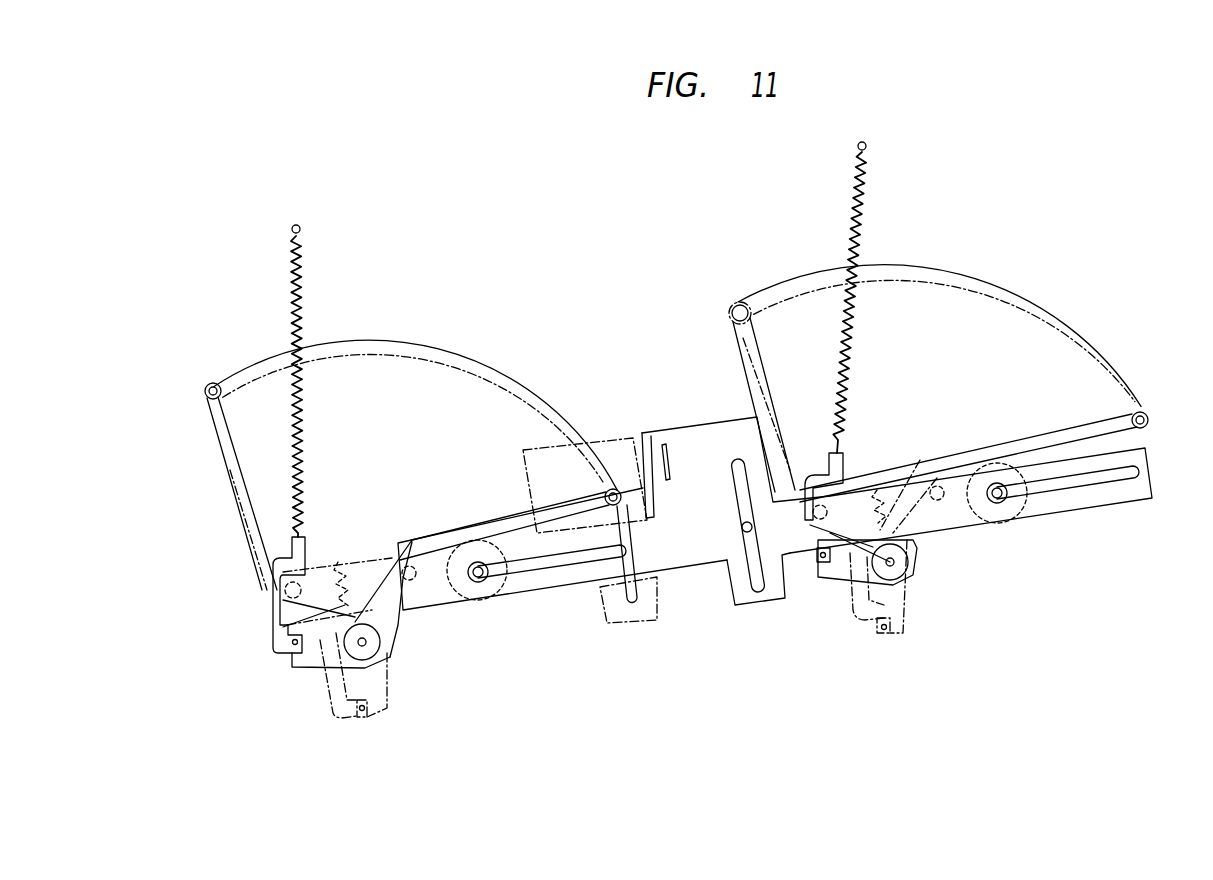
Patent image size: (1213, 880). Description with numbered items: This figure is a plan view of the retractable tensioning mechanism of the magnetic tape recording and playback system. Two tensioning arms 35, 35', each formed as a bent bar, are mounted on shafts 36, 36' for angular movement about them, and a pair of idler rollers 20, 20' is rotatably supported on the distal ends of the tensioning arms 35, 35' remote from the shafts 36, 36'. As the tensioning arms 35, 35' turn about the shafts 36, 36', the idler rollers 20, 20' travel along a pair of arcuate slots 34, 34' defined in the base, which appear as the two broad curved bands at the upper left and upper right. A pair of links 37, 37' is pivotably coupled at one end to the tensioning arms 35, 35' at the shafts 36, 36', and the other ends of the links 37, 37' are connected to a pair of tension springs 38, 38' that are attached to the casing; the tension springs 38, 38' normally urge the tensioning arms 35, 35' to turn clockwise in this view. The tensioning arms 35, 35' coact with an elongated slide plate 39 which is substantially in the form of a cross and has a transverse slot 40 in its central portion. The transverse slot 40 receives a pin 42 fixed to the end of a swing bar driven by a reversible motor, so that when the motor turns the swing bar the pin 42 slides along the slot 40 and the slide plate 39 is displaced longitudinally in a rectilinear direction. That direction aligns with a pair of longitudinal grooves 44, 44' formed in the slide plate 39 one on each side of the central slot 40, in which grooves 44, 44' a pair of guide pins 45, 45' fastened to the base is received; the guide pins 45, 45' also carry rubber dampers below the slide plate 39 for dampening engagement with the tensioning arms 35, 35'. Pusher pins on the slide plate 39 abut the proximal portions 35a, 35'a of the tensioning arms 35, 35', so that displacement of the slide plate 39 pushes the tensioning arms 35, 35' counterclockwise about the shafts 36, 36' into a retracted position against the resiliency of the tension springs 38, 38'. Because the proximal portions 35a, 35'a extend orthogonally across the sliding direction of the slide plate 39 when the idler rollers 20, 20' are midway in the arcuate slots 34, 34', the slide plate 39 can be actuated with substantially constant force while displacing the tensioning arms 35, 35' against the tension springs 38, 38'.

The idler roller 20 is at (939, 365).
The idler roller 20' is at (414, 420).
The arcuate slot 34 is at (944, 336).
The arcuate slot 34' is at (415, 415).
The tensioning arm 35 is at (935, 410).
The tensioning arm 35' is at (408, 493).
The proximal portion 35a is at (925, 528).
The proximal portion 35'a is at (368, 600).
The shaft 36 is at (876, 566).
The shaft 36' is at (357, 641).
The link 37 is at (856, 552).
The link 37' is at (308, 652).
The tension spring 38 is at (886, 332).
The tension spring 38' is at (333, 416).
The slide plate 39 is at (1128, 496).
The transverse slot 40 is at (757, 586).
The pin 42 is at (742, 527).
The longitudinal groove 44 is at (994, 500).
The longitudinal groove 44' is at (562, 534).
The guide pin 45 is at (997, 514).
The guide pin 45' is at (477, 590).